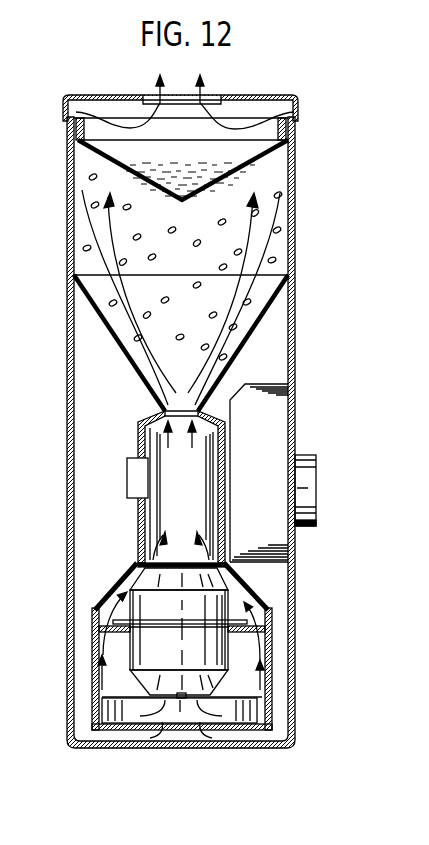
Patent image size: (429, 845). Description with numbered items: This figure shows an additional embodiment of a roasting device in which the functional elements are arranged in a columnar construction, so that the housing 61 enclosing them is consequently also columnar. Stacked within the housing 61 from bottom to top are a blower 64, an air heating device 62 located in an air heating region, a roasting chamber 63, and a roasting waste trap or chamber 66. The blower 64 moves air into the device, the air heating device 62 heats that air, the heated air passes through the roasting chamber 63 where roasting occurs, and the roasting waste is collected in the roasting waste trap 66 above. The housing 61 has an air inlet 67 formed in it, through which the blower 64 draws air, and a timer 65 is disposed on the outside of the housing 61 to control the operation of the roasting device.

The housing 61 is at (67, 462).
The air heating device 62 is at (160, 523).
The roasting chamber 63 is at (283, 248).
The blower 64 is at (220, 652).
The timer 65 is at (308, 480).
The roasting waste trap 66 is at (280, 148).
The air inlet 67 is at (290, 710).